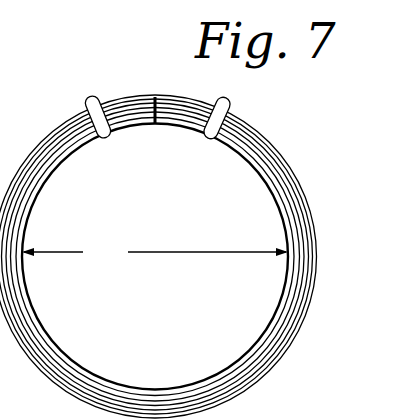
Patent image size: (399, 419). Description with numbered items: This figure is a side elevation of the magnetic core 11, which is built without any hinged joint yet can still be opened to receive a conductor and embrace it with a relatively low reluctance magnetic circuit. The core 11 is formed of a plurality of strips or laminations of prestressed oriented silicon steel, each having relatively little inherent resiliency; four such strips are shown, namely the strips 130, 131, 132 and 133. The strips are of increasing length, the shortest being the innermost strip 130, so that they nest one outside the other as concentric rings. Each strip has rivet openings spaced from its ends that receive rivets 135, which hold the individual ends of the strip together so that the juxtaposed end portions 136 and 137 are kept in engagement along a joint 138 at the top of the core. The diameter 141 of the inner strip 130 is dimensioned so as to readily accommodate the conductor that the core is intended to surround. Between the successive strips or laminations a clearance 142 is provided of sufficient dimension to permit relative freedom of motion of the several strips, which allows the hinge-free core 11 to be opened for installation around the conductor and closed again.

The magnetic core 11 is at (42, 112).
The innermost strip 130 is at (260, 172).
The strip 131 is at (282, 183).
The strip 132 is at (293, 204).
The strip 133 is at (312, 220).
The rivets 135 is at (92, 106).
The end portion 136 is at (128, 97).
The end portion 137 is at (172, 100).
The joint 138 is at (148, 118).
The diameter 141 is at (125, 265).
The clearance 142 is at (250, 357).